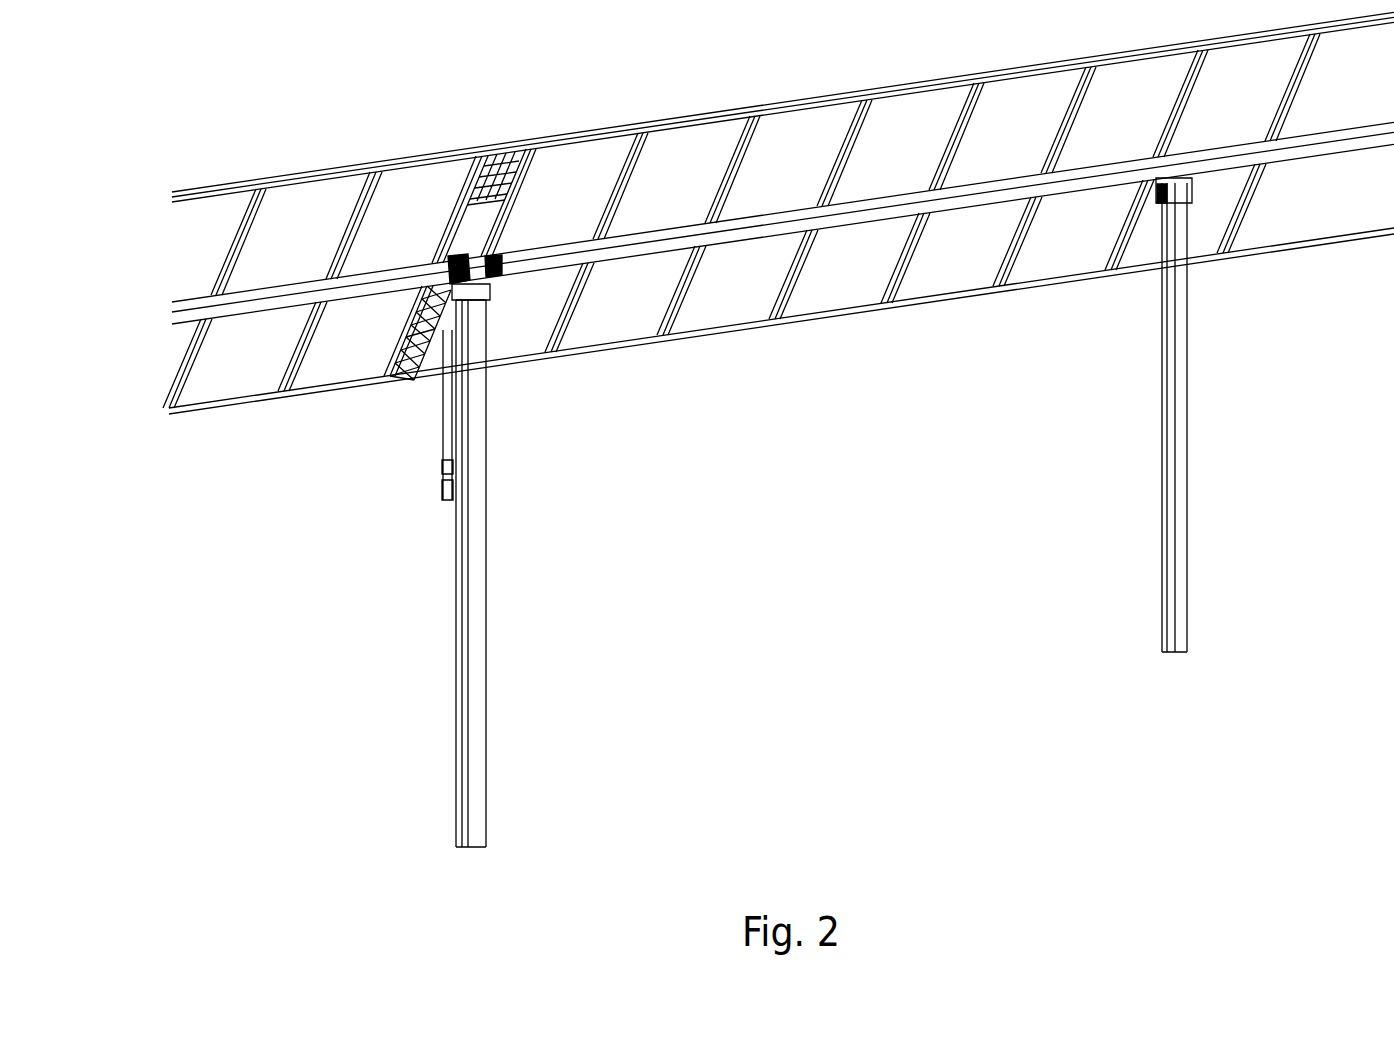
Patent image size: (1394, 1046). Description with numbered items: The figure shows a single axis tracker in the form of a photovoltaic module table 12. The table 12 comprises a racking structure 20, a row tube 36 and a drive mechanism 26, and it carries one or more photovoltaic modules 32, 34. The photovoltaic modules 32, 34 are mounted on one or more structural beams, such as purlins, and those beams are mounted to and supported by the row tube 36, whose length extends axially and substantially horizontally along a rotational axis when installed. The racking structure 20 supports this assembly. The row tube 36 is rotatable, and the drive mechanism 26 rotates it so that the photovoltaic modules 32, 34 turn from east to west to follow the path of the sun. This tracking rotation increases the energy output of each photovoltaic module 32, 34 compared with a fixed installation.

The photovoltaic module table 12 is at (747, 332).
The racking structure 20 is at (490, 418).
The drive mechanism 26 is at (443, 423).
The photovoltaic module 32 is at (572, 153).
The photovoltaic module 34 is at (695, 135).
The row tube 36 is at (813, 232).